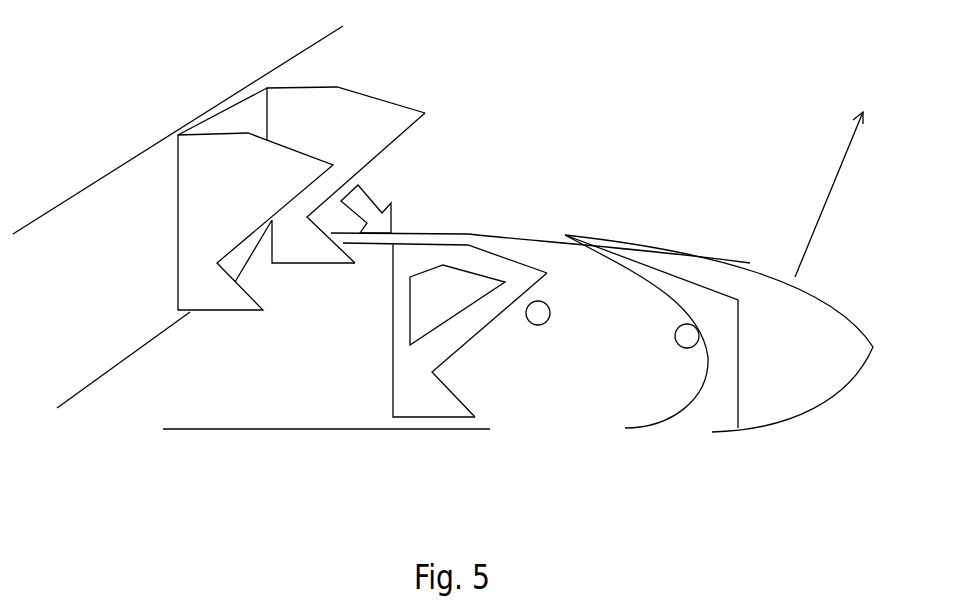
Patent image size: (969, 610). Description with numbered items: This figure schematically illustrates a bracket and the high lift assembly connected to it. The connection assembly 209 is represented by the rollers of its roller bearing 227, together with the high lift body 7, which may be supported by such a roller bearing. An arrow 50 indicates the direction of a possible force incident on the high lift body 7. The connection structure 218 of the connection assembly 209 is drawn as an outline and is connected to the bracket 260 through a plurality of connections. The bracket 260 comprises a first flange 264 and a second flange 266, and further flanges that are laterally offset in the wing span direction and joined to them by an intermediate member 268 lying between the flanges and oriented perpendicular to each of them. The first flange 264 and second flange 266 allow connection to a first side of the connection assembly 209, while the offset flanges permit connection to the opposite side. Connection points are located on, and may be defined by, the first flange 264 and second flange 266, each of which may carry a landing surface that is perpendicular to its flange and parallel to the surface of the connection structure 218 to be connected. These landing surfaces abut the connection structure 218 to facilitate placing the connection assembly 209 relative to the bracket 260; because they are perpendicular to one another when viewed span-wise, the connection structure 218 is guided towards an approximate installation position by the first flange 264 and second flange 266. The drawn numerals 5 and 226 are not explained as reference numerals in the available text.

The section plane / housing wall 5 is at (122, 210).
The high lift body 7 is at (808, 357).
The arrow 50 is at (843, 158).
The connection assembly 209 is at (625, 387).
The connection structure 218 is at (523, 292).
The serrations 226 is at (468, 412).
The roller bearing 227 is at (687, 335).
The bracket 260 is at (400, 93).
The first flange 264 is at (292, 170).
The second flange 266 is at (230, 297).
The intermediate member 268 is at (235, 123).